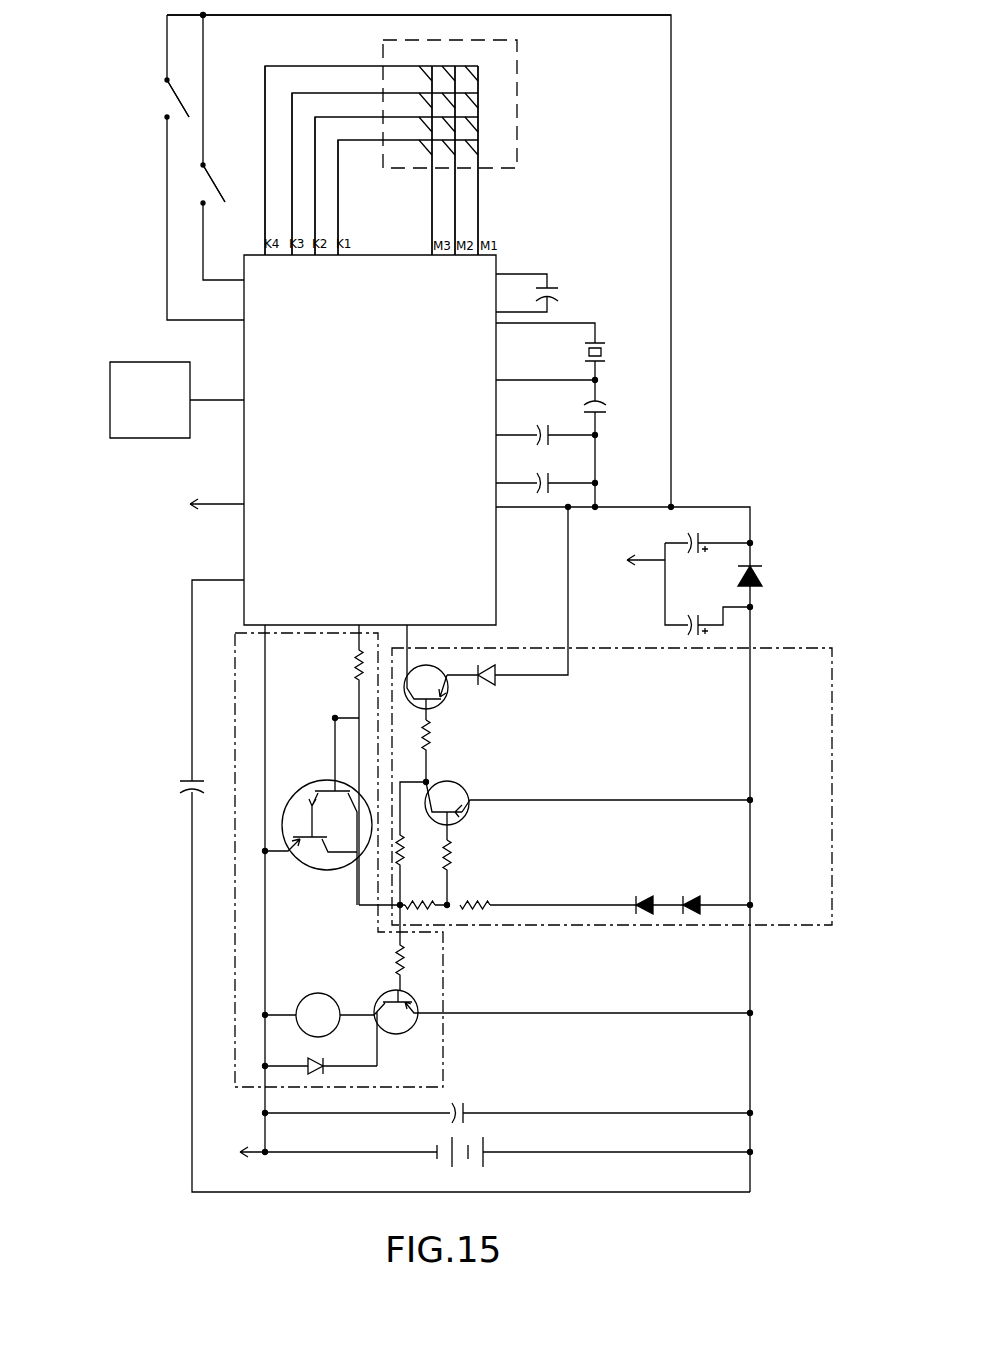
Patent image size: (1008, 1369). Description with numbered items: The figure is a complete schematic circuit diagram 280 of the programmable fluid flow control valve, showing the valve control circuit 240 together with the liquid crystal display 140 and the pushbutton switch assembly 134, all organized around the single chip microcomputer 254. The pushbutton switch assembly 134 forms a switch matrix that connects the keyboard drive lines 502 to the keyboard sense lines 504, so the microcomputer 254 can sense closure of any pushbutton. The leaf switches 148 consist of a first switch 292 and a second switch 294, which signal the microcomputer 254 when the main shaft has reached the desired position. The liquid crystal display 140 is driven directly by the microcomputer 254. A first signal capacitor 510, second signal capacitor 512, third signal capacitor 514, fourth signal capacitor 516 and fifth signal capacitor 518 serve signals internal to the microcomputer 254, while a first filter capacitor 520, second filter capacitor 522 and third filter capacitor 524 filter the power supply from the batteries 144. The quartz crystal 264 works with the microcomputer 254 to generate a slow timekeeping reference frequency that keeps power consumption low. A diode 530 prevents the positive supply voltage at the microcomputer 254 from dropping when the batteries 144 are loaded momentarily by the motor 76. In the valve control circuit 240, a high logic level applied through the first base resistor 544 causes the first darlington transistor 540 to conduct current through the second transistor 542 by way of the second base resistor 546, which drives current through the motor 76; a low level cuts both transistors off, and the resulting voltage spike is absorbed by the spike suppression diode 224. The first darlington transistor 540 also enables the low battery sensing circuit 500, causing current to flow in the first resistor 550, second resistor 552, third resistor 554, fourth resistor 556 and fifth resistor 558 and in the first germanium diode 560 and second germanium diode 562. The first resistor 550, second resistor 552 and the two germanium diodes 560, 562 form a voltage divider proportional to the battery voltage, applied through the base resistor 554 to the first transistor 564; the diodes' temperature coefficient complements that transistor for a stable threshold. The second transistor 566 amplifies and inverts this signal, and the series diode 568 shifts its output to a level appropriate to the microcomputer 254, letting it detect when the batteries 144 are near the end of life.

The circuit diagram 280 is at (127, 43).
The second switch 294 is at (88, 142).
The first switch 292 is at (230, 181).
The leaf switches 148 is at (197, 178).
The pushbutton switch assembly 134 is at (391, 147).
The keyboard sense lines 504 is at (349, 225).
The keyboard drive lines 502 is at (490, 225).
The single chip microcomputer 254 is at (458, 440).
The liquid crystal display 140 is at (177, 400).
The second signal capacitor 512 is at (567, 288).
The quartz crystal 264 is at (617, 355).
The third signal capacitor 514 is at (616, 413).
The fourth signal capacitor 516 is at (561, 428).
The fifth signal capacitor 518 is at (561, 476).
The first filter capacitor 520 is at (707, 534).
The second filter capacitor 522 is at (715, 611).
The diode 530 is at (772, 572).
The low battery sensing circuit 500 is at (832, 786).
The valve control circuit 240 is at (235, 897).
The first signal capacitor 510 is at (166, 782).
The first base resistor 544 is at (337, 765).
The first darlington transistor 540 is at (318, 811).
The first resistor 550 is at (419, 893).
The second resistor 552 is at (477, 893).
The second germanium diode 562 is at (633, 892).
The first germanium diode 560 is at (688, 892).
The second transistor 566 is at (440, 672).
The diode 568 is at (507, 601).
The fifth resistor 558 is at (450, 751).
The first transistor 564 is at (587, 801).
The fourth resistor 556 is at (418, 843).
The third resistor 554 is at (470, 867).
The second base resistor 546 is at (373, 947).
The second transistor 542 is at (547, 1021).
The motor 76 is at (319, 1016).
The spike suppression diode 224 is at (321, 1057).
The third filter capacitor 524 is at (507, 1106).
The batteries 144 is at (495, 1148).